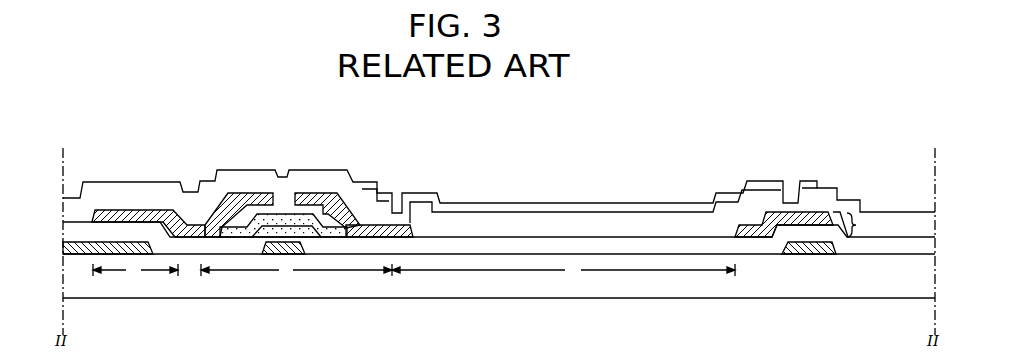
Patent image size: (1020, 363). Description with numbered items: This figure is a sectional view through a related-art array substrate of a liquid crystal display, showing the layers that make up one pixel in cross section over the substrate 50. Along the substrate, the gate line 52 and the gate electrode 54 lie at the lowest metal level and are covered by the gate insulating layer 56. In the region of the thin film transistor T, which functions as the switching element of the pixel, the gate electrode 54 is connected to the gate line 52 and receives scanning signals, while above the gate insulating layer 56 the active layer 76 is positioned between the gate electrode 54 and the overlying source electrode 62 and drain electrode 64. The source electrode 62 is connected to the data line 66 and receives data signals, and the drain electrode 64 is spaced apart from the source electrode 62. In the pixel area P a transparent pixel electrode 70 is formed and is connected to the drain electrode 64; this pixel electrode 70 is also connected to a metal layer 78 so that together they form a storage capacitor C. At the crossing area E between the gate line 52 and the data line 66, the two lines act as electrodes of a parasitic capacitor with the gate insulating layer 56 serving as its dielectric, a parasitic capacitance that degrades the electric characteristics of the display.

The substrate 50 is at (854, 285).
The gate line 52 is at (115, 255).
The gate electrode 54 is at (272, 255).
The gate insulating layer 56 is at (558, 240).
The source electrode 62 is at (254, 192).
The drain electrode 64 is at (304, 192).
The data line 66 is at (119, 218).
The pixel electrode 70 is at (617, 204).
The active layer 76 is at (339, 212).
The metal layer 78 is at (822, 202).
The storage capacitor C is at (858, 225).
The crossing area E is at (135, 270).
The thin film transistor T is at (296, 270).
The pixel area P is at (563, 270).